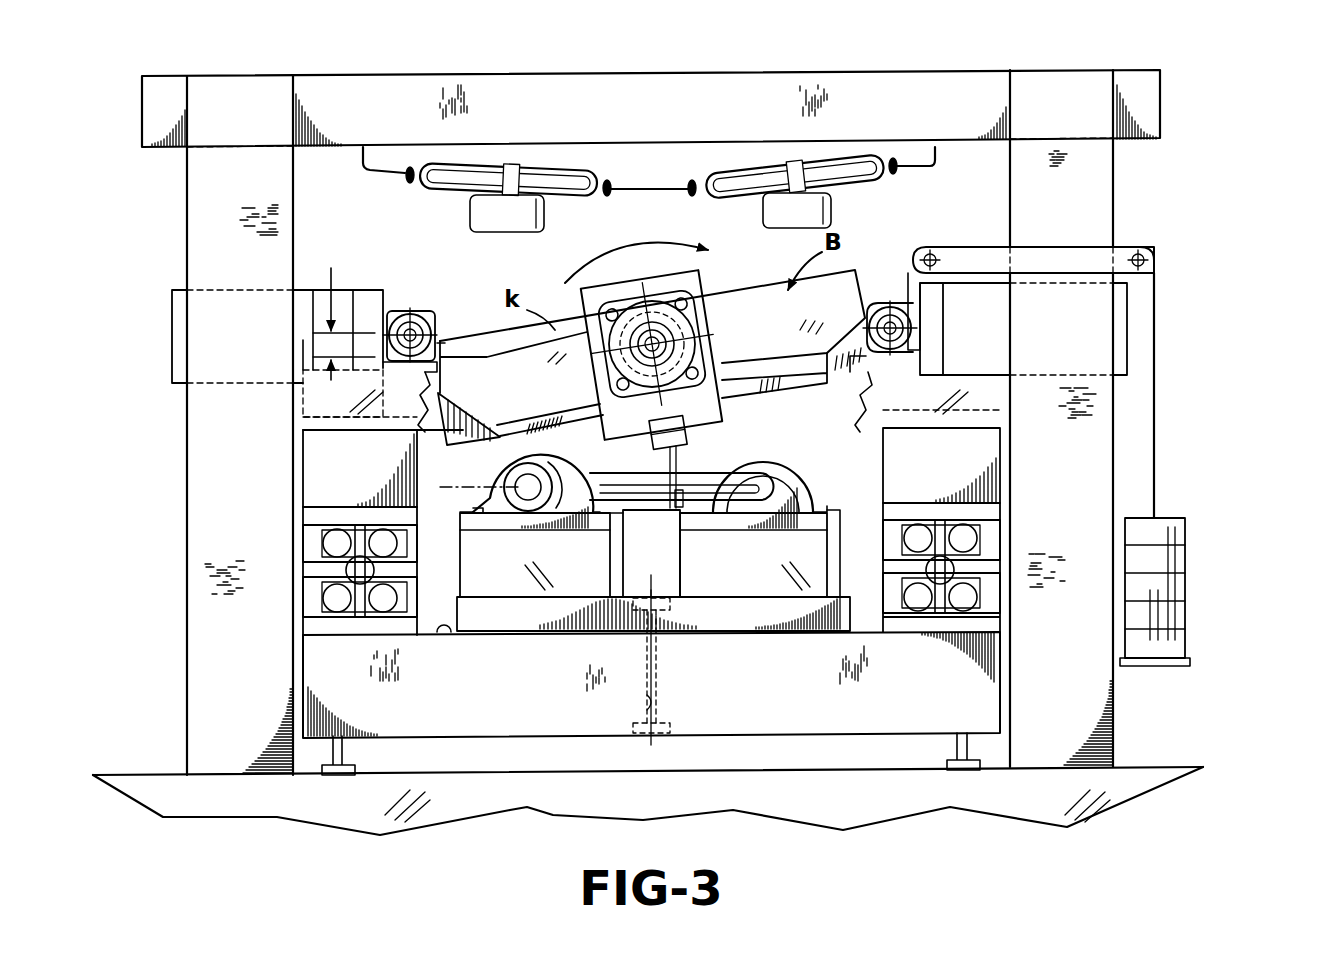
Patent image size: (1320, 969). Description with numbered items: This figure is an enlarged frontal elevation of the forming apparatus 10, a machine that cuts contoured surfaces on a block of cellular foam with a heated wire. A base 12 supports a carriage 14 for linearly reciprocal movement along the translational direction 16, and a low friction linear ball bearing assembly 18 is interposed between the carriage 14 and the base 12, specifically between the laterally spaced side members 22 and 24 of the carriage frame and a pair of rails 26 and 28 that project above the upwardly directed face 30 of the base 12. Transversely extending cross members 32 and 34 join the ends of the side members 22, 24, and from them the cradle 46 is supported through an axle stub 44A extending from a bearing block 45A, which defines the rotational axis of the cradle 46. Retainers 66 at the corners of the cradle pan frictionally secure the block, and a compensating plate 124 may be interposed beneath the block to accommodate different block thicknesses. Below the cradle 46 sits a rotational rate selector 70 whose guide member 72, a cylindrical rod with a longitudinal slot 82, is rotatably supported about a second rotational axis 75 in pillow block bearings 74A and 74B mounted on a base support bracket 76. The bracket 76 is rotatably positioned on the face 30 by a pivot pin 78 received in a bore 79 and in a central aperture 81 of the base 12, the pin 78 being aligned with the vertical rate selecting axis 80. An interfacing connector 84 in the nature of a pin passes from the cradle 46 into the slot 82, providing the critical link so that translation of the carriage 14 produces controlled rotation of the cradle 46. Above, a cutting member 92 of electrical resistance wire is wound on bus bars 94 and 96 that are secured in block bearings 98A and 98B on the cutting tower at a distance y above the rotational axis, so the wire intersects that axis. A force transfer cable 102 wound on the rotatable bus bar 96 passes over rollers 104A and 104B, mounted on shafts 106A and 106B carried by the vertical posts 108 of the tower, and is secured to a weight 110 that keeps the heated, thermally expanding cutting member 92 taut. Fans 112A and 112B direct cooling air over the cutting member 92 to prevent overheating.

The forming apparatus 10 is at (1264, 148).
The base 12 is at (882, 705).
The carriage 14 is at (298, 430).
The translational direction 16 is at (350, 560).
The ball bearing assembly 18 is at (350, 602).
The side member 22 is at (320, 468).
The side member 24 is at (990, 462).
The rail 26 is at (310, 626).
The rail 28 is at (985, 623).
The upwardly directed face 30 is at (432, 632).
The cross member 32 is at (828, 415).
The cross member 34 is at (305, 400).
The axle stub 44A is at (680, 341).
The bearing block 45A is at (690, 308).
The cradle 46 is at (580, 297).
The retainer 66 is at (445, 440).
The rotational rate selector 70 is at (528, 628).
The guide member 72 is at (762, 480).
The pillow block bearing 74A is at (552, 523).
The pillow block bearing 74B is at (790, 517).
The second rotational axis 75 is at (440, 496).
The base support bracket 76 is at (785, 612).
The pivot pin 78 is at (660, 685).
The bore 79 is at (660, 652).
The rate selecting axis 80 is at (655, 581).
The central aperture 81 is at (645, 708).
The slot 82 is at (643, 497).
The interfacing connector 84 is at (660, 462).
The cutting member 92 is at (806, 348).
The bus bar 94 is at (437, 330).
The bus bar 96 is at (882, 306).
The block bearing 98A is at (403, 316).
The block bearing 98B is at (918, 326).
The force transfer cable 102 is at (1158, 360).
The roller 104A is at (927, 245).
The roller 104B is at (1150, 248).
The shaft 106A is at (940, 256).
The shaft 106B is at (1150, 264).
The vertical post 108 is at (200, 220).
The weight 110 is at (1180, 582).
The fan 112A is at (472, 176).
The fan 112B is at (848, 162).
The compensating plate 124 is at (567, 405).